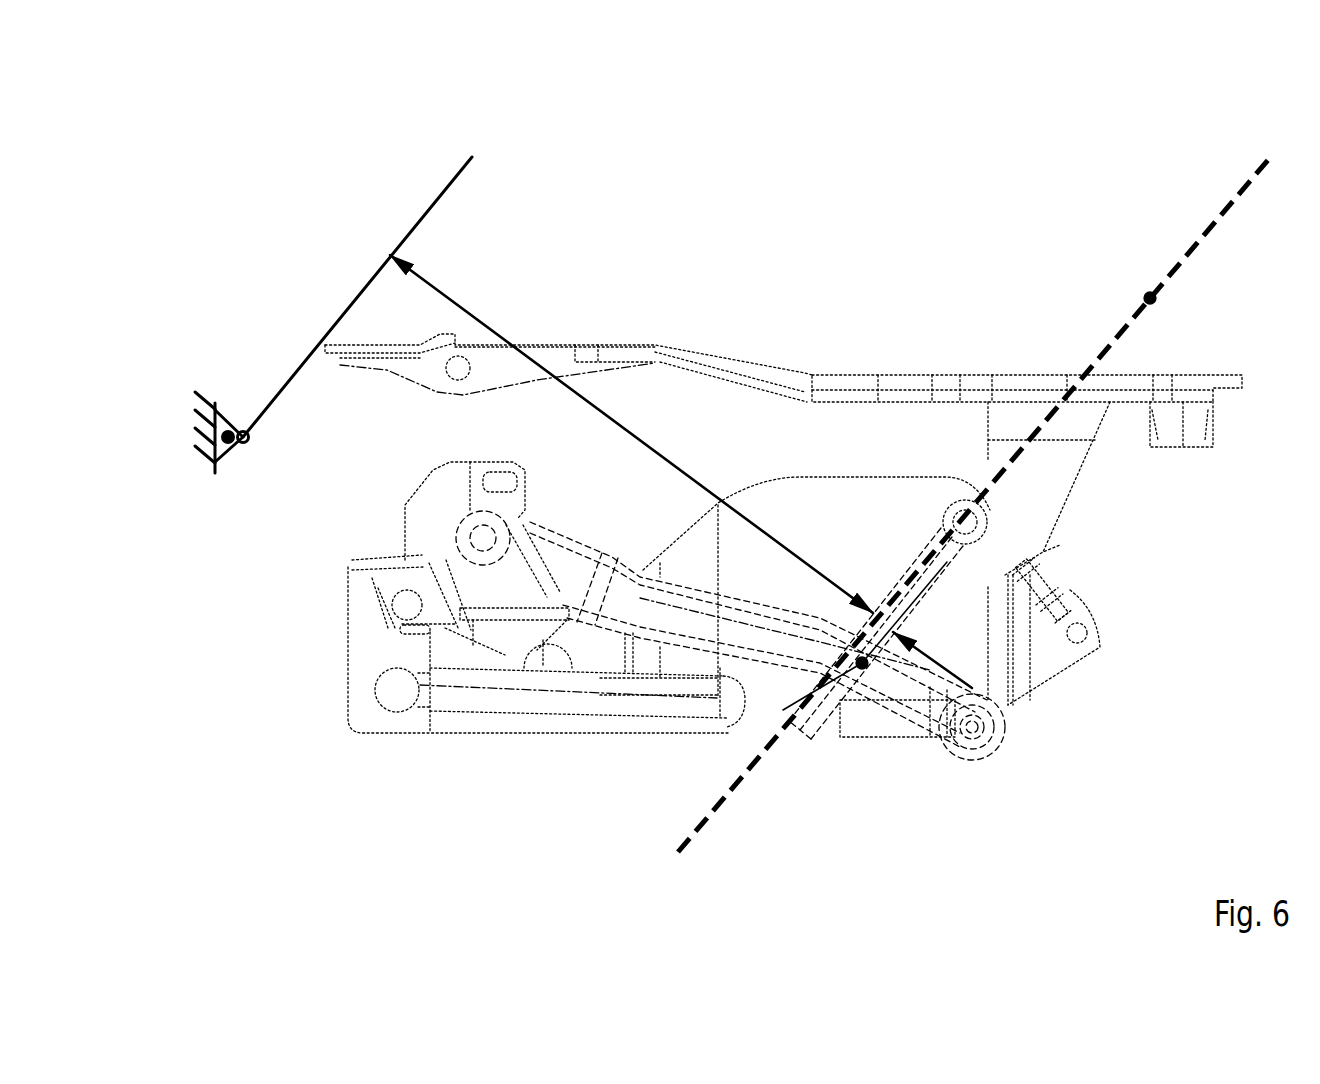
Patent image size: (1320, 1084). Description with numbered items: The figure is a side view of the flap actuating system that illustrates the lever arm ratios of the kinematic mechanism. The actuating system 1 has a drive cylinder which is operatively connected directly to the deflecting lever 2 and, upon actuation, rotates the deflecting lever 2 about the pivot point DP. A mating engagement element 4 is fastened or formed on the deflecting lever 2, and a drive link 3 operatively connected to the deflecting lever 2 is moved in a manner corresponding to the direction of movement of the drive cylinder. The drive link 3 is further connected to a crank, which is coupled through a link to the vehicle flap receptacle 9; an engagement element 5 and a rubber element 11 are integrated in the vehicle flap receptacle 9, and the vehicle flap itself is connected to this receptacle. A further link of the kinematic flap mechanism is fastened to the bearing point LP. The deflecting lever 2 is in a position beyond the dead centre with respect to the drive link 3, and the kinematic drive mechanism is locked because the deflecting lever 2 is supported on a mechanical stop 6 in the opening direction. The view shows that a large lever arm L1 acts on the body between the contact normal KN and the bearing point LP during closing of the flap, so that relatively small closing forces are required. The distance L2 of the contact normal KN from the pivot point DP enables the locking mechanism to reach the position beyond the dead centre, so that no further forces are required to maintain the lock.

The actuating system 1 is at (463, 705).
The deflecting lever 2 is at (824, 708).
The drive link 3 is at (813, 650).
The mating engagement element 4 is at (967, 522).
The engagement element 5 is at (1022, 533).
The mechanical stop 6 is at (1035, 568).
The vehicle flap receptacle 9 is at (683, 353).
The rubber element 11 is at (1170, 427).
The bearing point LP is at (228, 435).
The contact normal KN is at (1150, 298).
The pivot point DP is at (864, 667).
The lever arm L1 is at (631, 434).
The distance L2 is at (943, 646).